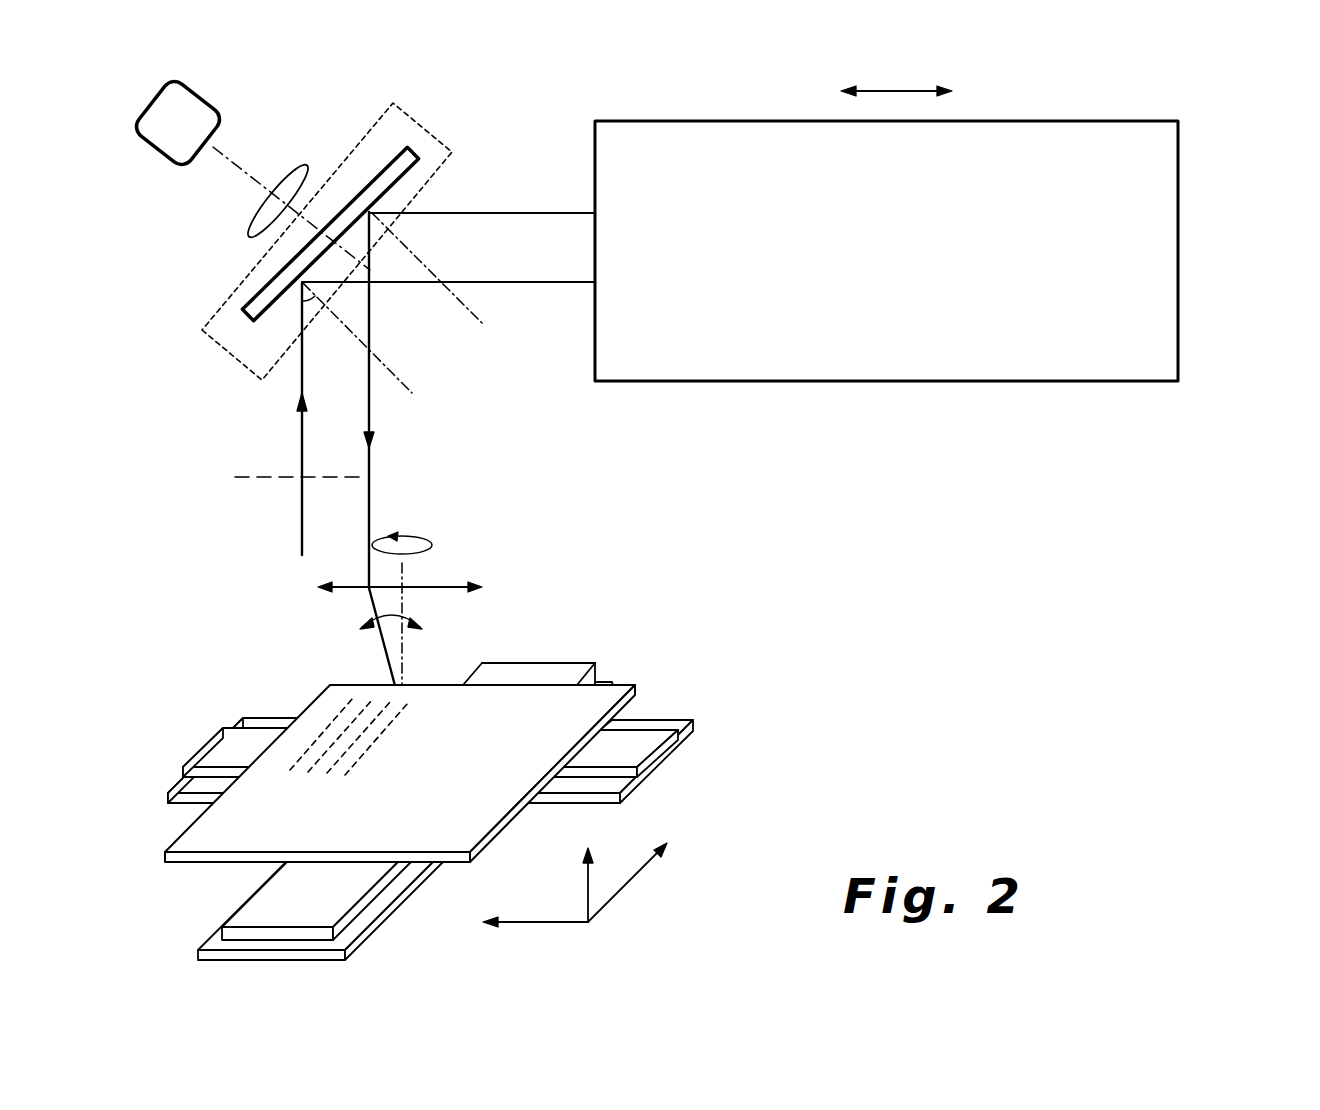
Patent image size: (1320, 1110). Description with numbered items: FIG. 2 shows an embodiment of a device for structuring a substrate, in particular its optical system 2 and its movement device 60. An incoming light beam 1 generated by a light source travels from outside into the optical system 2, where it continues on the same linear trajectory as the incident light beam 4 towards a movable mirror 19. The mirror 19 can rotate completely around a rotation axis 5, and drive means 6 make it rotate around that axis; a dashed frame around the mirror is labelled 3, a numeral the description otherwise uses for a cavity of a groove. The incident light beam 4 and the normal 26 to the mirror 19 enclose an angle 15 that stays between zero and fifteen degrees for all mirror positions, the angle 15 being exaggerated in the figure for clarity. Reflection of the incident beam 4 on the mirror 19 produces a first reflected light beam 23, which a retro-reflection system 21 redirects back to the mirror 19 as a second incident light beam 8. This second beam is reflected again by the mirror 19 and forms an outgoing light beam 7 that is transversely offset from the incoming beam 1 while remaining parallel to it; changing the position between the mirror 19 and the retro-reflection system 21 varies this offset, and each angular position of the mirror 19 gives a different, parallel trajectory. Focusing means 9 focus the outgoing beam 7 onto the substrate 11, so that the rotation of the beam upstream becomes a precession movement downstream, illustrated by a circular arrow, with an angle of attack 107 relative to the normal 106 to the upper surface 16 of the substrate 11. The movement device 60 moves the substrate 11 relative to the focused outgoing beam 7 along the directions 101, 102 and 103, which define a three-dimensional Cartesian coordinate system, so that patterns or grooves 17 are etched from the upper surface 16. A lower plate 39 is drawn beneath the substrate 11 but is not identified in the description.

The incoming light beam 1 is at (302, 503).
The optical system 2 is at (1232, 165).
The cavity 3 is at (213, 340).
The incident light beam 4 is at (300, 440).
The rotation axis 5 is at (237, 173).
The drive means 6 is at (175, 113).
The outgoing light beam 7 is at (372, 395).
The second incident light beam 8 is at (515, 217).
The focusing means 9 is at (440, 588).
The substrate 11 is at (497, 835).
The angle 15 is at (312, 317).
The upper surface 16 is at (582, 712).
The grooves 17 is at (352, 723).
The movable mirror 19 is at (248, 307).
The retro-reflection system 21 is at (1128, 382).
The first reflected light beam 23 is at (557, 287).
The normal to the mirror 26 is at (480, 330).
The base plate 39 is at (205, 942).
The movement device 60 is at (185, 746).
The direction 101 is at (630, 885).
The direction 102 is at (528, 927).
The direction 103 is at (585, 875).
The normal to the surface of the substrate 106 is at (408, 660).
The angle of attack 107 is at (380, 617).